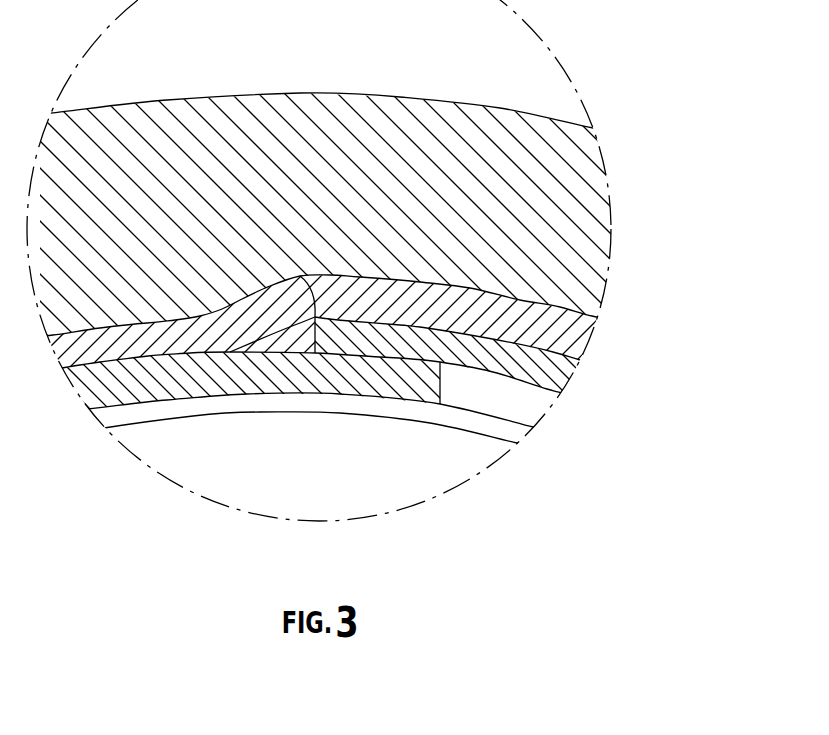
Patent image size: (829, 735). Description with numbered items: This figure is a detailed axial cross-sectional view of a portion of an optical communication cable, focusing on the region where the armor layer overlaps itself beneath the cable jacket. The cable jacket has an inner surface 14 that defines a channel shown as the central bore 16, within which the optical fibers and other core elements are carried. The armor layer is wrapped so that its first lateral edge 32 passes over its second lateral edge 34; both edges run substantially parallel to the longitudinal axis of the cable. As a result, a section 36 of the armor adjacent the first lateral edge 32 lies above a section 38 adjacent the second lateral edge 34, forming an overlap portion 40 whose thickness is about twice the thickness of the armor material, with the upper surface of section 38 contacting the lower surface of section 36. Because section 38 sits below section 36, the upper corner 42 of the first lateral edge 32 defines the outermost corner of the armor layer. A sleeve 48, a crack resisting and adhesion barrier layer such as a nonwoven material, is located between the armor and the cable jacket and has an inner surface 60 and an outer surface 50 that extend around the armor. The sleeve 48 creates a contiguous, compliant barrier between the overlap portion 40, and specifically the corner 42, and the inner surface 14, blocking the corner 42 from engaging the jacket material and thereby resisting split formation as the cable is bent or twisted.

The inner surface 14 is at (147, 332).
The central bore 16 is at (73, 352).
The first lateral edge 32 is at (268, 348).
The second lateral edge 34 is at (440, 380).
The section of armor layer adjacent first lateral edge 36 is at (368, 338).
The section of armor layer adjacent second lateral edge 38 is at (377, 382).
The overlap portion 40 is at (407, 343).
The upper corner 42 is at (300, 274).
The sleeve 48 is at (587, 311).
The outer surface 50 is at (345, 259).
The inner surface 60 is at (315, 318).